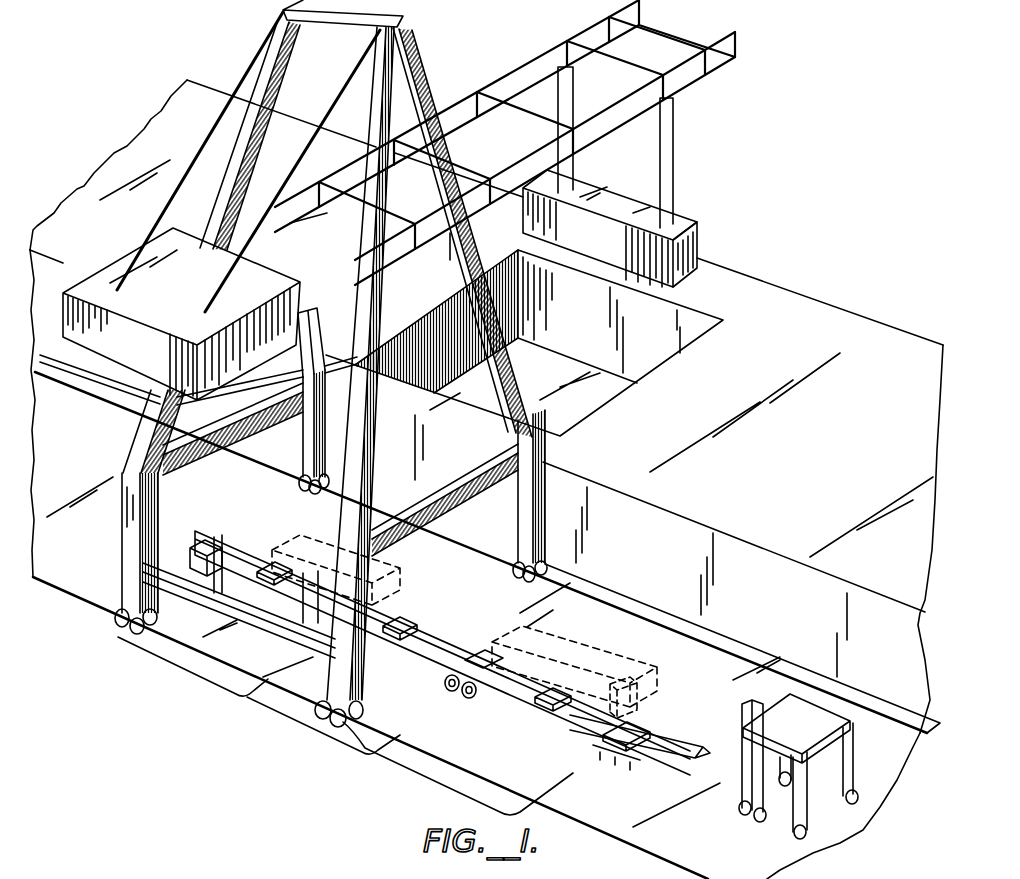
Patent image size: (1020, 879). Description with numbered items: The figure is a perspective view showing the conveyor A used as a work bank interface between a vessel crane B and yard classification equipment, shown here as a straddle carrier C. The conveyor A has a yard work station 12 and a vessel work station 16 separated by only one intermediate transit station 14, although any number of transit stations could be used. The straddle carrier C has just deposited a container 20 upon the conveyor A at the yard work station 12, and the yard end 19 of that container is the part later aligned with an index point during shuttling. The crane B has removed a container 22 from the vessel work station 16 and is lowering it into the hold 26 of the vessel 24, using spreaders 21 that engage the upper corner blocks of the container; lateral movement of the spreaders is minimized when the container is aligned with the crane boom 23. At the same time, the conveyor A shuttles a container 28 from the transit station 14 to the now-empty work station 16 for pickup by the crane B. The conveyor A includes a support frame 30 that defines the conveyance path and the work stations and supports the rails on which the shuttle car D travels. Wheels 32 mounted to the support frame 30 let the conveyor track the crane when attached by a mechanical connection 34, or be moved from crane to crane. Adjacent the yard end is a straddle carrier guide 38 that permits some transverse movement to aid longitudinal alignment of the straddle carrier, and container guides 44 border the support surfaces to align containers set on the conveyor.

The yard work station 12 is at (450, 780).
The intermediate transit station 14 is at (303, 728).
The vessel work station 16 is at (177, 672).
The yard end 19 is at (643, 690).
The container 20 is at (557, 643).
The spreaders 21 is at (650, 213).
The container 22 is at (700, 231).
The crane boom 23 is at (555, 42).
The vessel 24 is at (808, 300).
The hold 26 is at (693, 348).
The container 28 is at (397, 567).
The support frame 30 is at (423, 627).
The wheels 32 is at (464, 700).
The mechanical connection 34 is at (195, 550).
The straddle carrier guide 38 is at (687, 728).
The container guide 44 is at (582, 745).
The conveyor A is at (447, 633).
The vessel crane B is at (412, 37).
The straddle carrier C is at (826, 707).
The shuttle car D is at (476, 660).